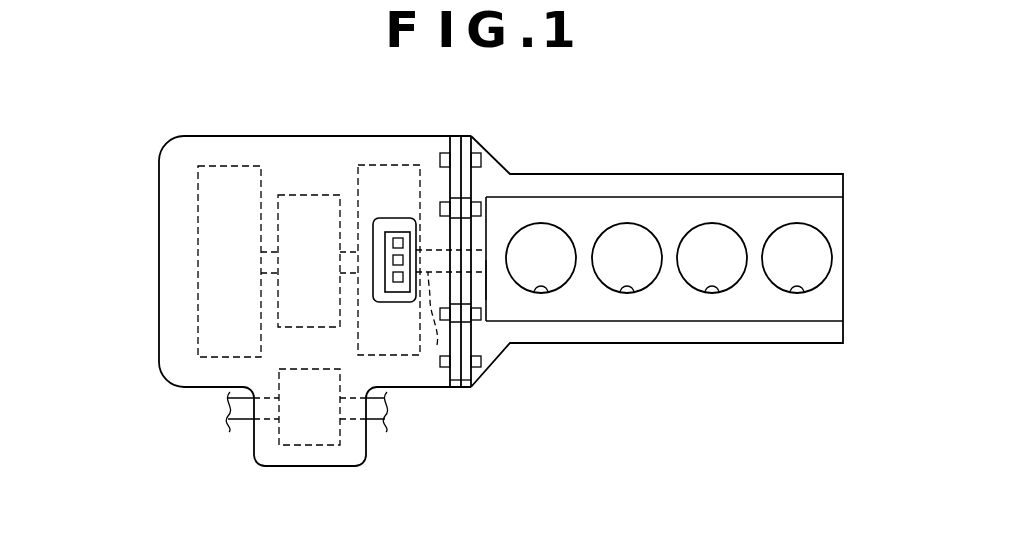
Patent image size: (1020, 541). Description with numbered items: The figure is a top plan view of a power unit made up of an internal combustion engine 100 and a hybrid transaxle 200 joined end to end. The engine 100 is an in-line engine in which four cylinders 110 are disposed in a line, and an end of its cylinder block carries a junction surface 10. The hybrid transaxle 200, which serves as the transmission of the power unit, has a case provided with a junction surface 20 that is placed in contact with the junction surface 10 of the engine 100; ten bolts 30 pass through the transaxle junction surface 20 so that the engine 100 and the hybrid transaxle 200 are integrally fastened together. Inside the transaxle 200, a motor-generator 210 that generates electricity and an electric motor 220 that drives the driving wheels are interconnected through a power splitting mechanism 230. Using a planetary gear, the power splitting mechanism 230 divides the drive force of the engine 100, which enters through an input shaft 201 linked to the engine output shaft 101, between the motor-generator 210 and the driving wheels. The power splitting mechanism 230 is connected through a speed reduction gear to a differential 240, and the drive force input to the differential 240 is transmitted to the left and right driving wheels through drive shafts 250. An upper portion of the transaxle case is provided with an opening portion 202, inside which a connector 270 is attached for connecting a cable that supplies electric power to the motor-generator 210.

The junction surface 10 is at (460, 140).
The junction surface 20 is at (462, 387).
The bolts 30 is at (481, 160).
The internal combustion engine 100 is at (732, 146).
The output shaft 101 is at (475, 272).
The cylinders 110 is at (543, 293).
The hybrid transaxle 200 is at (215, 136).
The input shaft 201 is at (437, 345).
The opening portion 202 is at (395, 292).
The motor-generator 210 is at (370, 165).
The electric motor 220 is at (198, 208).
The power splitting mechanism 230 is at (297, 195).
The differential 240 is at (309, 445).
The drive shafts 250 is at (385, 422).
The connector 270 is at (393, 232).